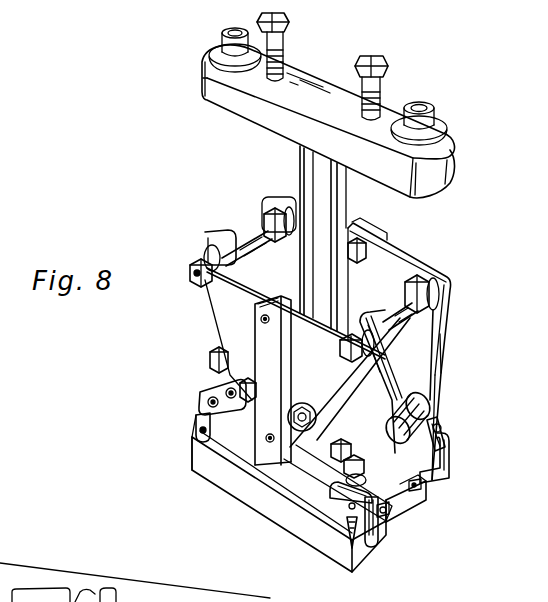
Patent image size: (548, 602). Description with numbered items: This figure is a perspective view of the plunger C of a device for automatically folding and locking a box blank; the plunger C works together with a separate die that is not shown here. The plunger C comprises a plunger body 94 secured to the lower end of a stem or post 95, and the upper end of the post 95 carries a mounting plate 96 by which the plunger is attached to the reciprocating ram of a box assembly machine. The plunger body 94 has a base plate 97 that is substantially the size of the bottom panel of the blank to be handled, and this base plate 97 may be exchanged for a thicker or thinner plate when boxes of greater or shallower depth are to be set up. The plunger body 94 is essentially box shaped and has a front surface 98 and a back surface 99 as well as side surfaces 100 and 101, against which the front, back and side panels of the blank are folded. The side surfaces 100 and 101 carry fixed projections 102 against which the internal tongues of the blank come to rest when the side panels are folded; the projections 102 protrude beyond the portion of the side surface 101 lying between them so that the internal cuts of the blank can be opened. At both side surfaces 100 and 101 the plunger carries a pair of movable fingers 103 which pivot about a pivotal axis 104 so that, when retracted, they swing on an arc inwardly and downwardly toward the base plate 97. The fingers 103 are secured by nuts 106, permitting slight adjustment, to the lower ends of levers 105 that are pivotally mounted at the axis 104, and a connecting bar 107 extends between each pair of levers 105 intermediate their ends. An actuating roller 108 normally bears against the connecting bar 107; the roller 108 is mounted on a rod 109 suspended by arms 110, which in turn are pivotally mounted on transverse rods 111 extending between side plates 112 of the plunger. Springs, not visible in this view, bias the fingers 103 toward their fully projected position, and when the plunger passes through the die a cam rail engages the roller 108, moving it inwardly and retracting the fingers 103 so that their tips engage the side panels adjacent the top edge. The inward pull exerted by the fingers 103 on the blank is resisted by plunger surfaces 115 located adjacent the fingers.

The plunger body 94 is at (193, 453).
The stem or post 95 is at (303, 163).
The mounting plate 96 is at (445, 156).
The base plate 97 is at (318, 545).
The front surface 98 is at (265, 500).
The back surface 99 is at (443, 443).
The side surface 100 is at (200, 427).
The side surface 101 is at (400, 503).
The fixed projections 102 is at (422, 484).
The movable fingers 103 is at (202, 395).
The pivotal axis 104 is at (290, 415).
The levers 105 is at (343, 437).
The nuts 106 is at (332, 498).
The connecting bar 107 is at (417, 380).
The actuating roller 108 is at (432, 420).
The rod 109 is at (393, 437).
The arms 110 is at (200, 247).
The transverse rods 111 is at (252, 223).
The side plates 112 is at (323, 341).
The plunger surfaces 115 is at (200, 418).
The plunger C is at (440, 334).